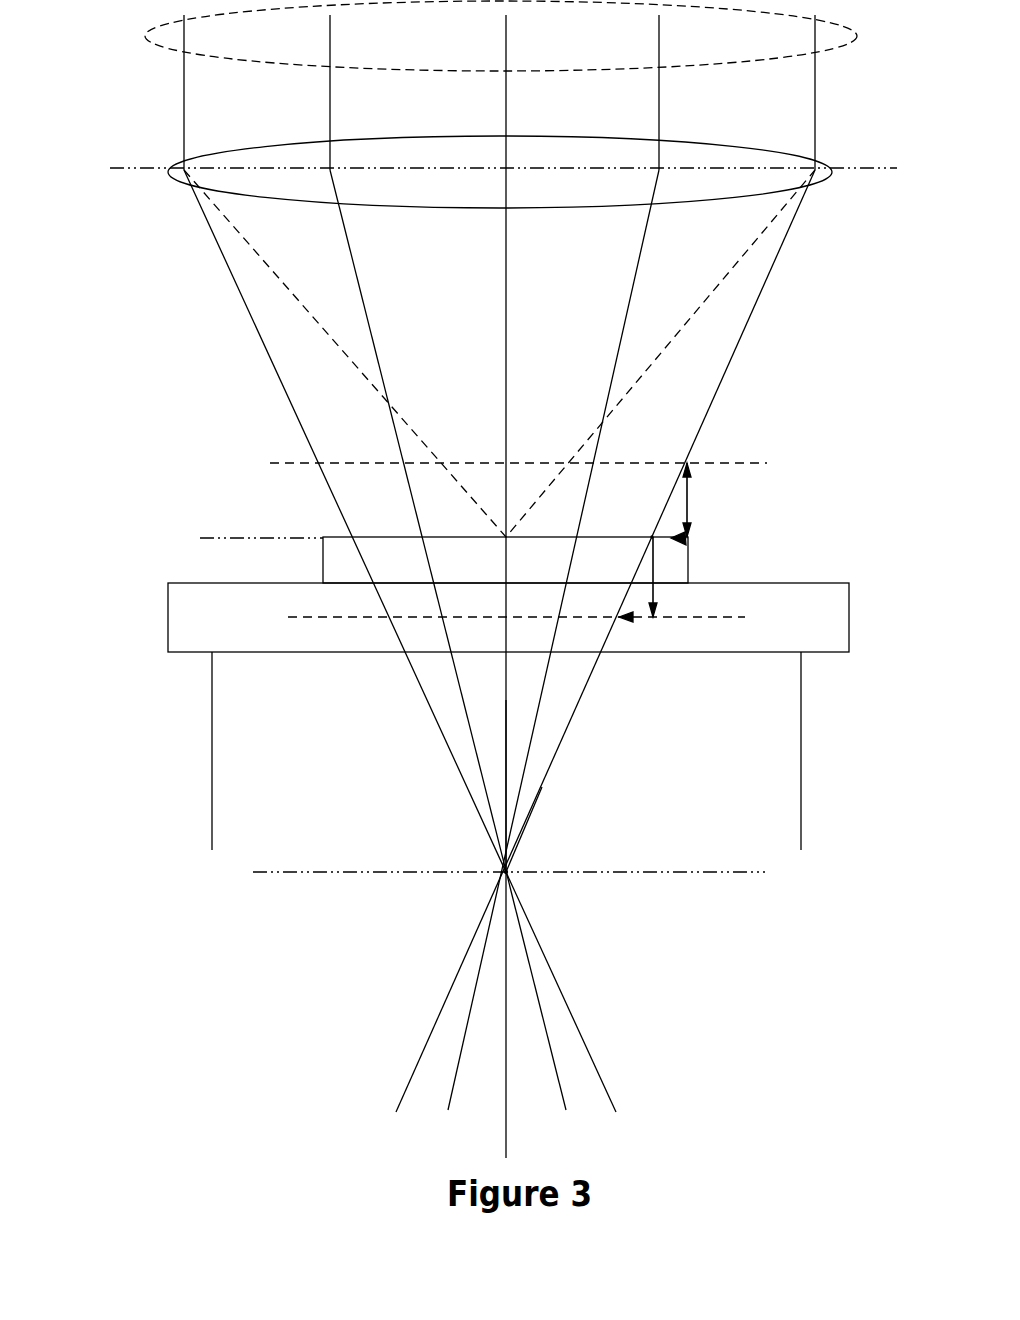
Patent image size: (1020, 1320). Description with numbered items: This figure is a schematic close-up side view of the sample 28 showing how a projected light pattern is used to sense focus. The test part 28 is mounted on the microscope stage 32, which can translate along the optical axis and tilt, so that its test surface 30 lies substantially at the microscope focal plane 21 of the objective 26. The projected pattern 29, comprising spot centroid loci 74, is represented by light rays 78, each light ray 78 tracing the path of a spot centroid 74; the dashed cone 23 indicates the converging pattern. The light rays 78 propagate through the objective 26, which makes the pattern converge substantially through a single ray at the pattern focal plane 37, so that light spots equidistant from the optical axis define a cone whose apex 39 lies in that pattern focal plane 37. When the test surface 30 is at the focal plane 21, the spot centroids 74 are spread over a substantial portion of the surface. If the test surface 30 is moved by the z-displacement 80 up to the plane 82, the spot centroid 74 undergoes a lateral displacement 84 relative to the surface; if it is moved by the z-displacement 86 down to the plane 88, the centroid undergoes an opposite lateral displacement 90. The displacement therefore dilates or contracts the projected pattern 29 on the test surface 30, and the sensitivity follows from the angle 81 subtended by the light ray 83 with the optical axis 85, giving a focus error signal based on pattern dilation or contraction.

The microscope focal plane 21 is at (200, 538).
The dashed beam cone 23 is at (260, 260).
The microscope objective 26 is at (822, 175).
The test part 28 is at (323, 561).
The projected pattern 29 is at (172, 43).
The test surface 30 is at (372, 537).
The microscope stage 32 is at (212, 739).
The pattern focal plane 37 is at (253, 872).
The apex 39 is at (500, 875).
The spot centroid 74 is at (652, 537).
The light ray 78 is at (753, 313).
The z-displacement 80 is at (688, 505).
The angle theta 81 is at (512, 712).
The plane 82 is at (740, 463).
The light ray 83 is at (548, 787).
The lateral displacement 84 is at (680, 541).
The optical axis 85 is at (512, 762).
The z-displacement 86 is at (660, 606).
The plane 88 is at (728, 612).
The lateral displacement 90 is at (630, 621).